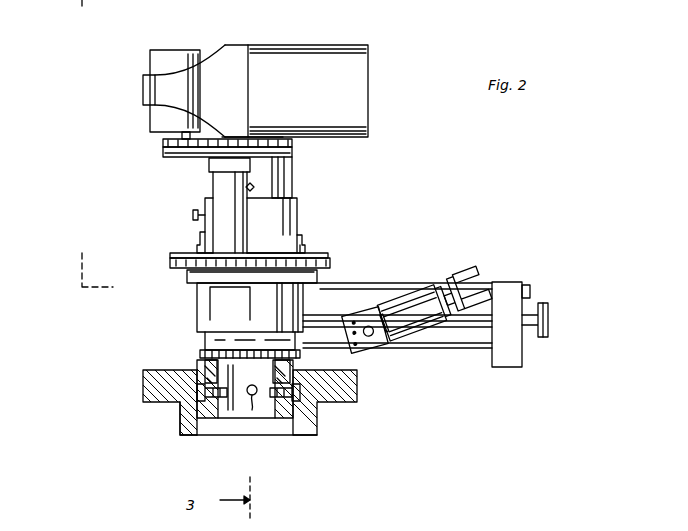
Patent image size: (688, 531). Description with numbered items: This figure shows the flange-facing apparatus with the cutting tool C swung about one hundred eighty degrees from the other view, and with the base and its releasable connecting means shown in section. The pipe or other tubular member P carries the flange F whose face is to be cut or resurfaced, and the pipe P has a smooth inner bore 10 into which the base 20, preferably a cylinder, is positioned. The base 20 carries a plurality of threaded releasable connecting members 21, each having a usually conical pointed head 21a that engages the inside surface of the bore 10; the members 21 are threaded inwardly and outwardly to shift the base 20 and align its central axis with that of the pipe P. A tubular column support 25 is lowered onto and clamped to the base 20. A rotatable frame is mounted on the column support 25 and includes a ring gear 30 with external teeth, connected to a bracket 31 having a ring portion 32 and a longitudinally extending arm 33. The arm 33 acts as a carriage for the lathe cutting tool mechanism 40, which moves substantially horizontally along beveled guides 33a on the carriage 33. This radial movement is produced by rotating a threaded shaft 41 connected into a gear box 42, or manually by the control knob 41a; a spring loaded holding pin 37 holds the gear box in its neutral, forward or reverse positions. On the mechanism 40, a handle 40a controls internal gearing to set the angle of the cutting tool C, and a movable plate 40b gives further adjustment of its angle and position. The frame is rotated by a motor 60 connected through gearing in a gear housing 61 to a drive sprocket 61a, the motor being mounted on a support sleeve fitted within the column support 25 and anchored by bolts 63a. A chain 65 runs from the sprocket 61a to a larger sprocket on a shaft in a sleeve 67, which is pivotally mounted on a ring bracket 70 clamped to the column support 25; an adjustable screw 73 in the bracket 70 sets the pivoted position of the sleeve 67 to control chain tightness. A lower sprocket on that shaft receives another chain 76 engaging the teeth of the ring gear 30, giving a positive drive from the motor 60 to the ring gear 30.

The motor 60 is at (365, 72).
The gear housing 61 is at (152, 62).
The drive sprocket 61a is at (177, 157).
The tubular column support 25 is at (293, 158).
The chain 65 is at (262, 152).
The bolts 63a is at (255, 187).
The sleeve 67 is at (233, 210).
The ring bracket 70 is at (297, 210).
The adjustable screw 73 is at (193, 214).
The chain 76 is at (170, 256).
The ring gear 30 is at (320, 253).
The bracket 31 is at (187, 277).
The ring portion 32 is at (197, 300).
The arm 33 is at (333, 302).
The beveled guides 33a is at (318, 293).
The threaded shaft 41 is at (483, 322).
The gear box 42 is at (522, 347).
The spring loaded holding pin 37 is at (530, 288).
The control knob 41a is at (548, 305).
The lathe cutting tool mechanism 40 is at (433, 280).
The handle 40a is at (477, 263).
The movable plate 40b is at (388, 330).
The cutting tool C is at (357, 362).
The head 21a is at (197, 375).
The releasable connecting members 21 is at (237, 415).
The base 20 is at (223, 425).
The flange F is at (143, 378).
The pipe P is at (180, 423).
The inner bore 10 is at (293, 436).